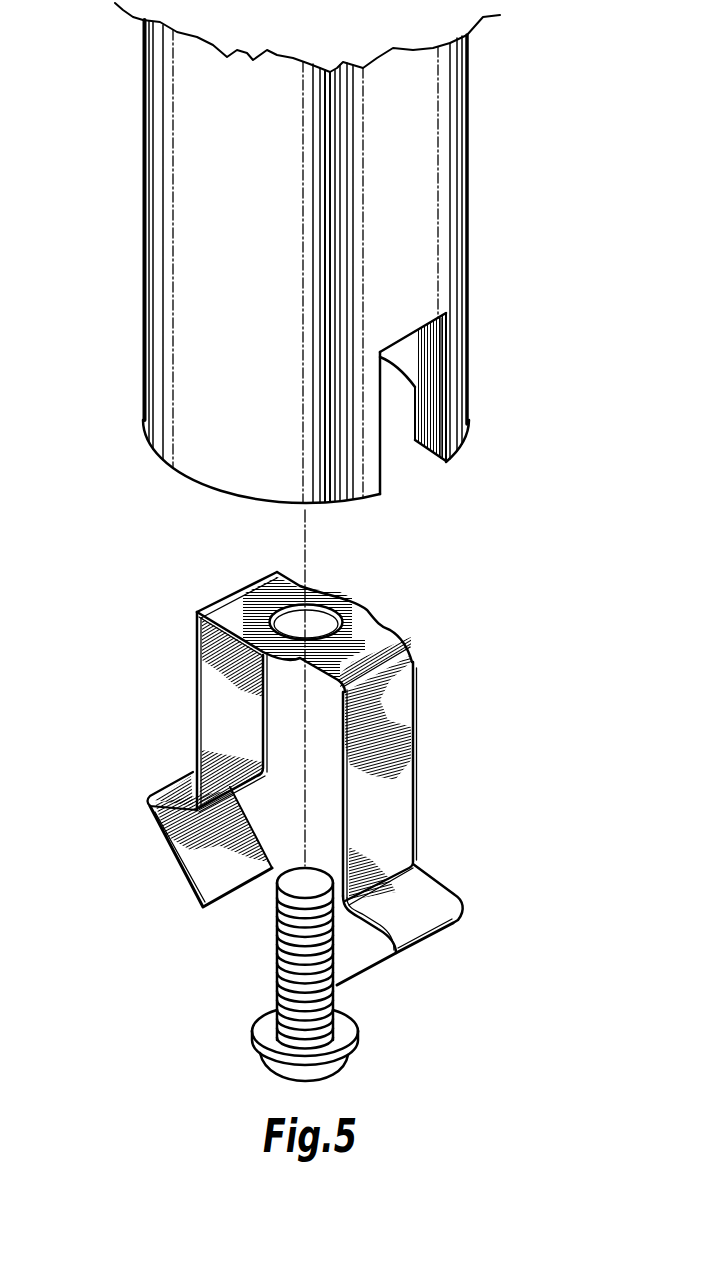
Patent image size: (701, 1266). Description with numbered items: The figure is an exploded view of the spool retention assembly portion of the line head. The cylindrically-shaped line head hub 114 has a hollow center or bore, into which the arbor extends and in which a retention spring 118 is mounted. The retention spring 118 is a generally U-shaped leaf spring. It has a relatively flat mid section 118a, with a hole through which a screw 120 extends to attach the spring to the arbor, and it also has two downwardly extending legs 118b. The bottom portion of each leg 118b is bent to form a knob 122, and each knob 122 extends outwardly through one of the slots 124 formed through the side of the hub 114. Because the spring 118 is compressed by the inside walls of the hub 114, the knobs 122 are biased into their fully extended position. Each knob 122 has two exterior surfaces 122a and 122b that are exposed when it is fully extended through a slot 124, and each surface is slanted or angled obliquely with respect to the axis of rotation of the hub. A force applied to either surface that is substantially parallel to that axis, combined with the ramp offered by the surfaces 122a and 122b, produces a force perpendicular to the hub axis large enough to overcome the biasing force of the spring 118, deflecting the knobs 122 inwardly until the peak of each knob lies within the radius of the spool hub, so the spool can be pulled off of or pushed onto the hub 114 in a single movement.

The line head hub 114 is at (343, 253).
The slots 124 is at (393, 404).
The retention spring 118 is at (316, 783).
The mid section 118a is at (373, 633).
The legs 118b is at (197, 702).
The knob 122 is at (310, 869).
The exterior surface 122a is at (184, 875).
The exterior surface 122b is at (173, 782).
The screw 120 is at (347, 1060).